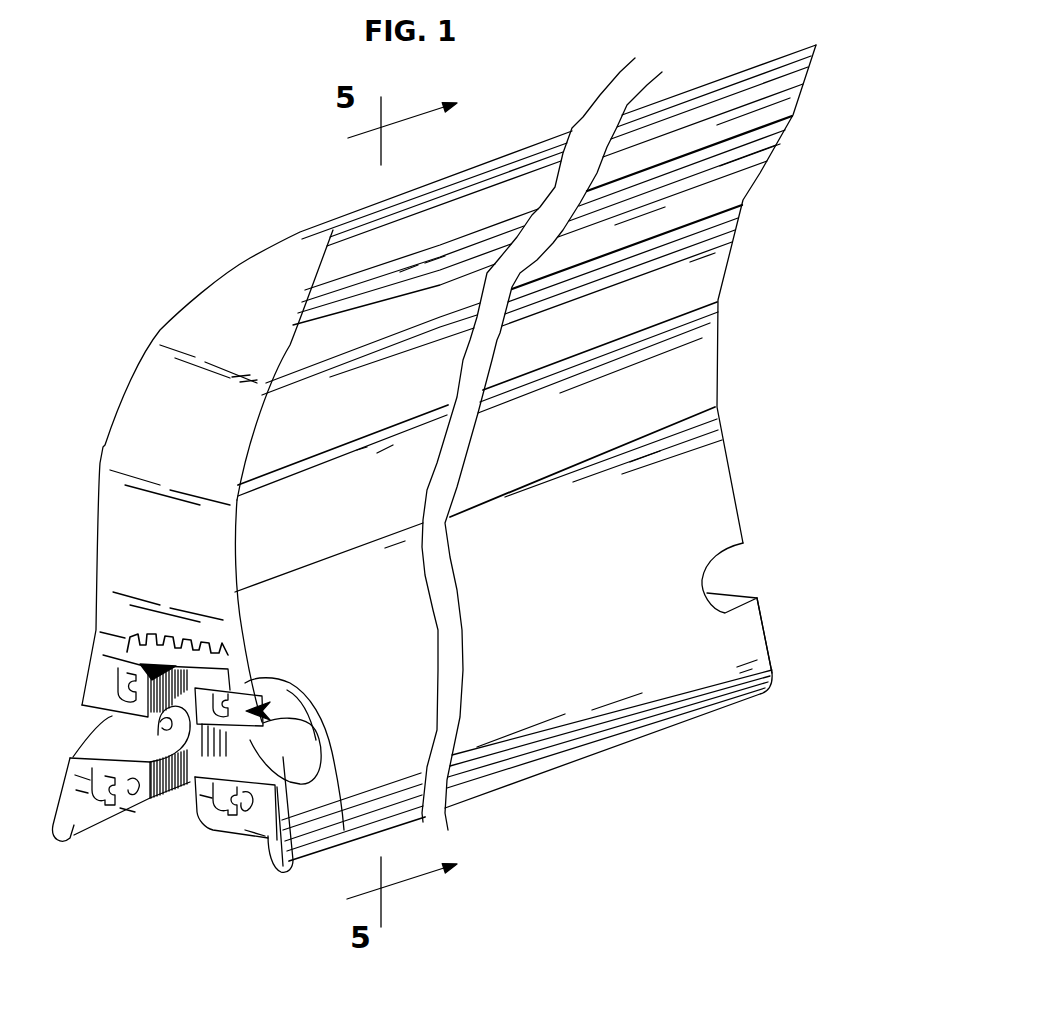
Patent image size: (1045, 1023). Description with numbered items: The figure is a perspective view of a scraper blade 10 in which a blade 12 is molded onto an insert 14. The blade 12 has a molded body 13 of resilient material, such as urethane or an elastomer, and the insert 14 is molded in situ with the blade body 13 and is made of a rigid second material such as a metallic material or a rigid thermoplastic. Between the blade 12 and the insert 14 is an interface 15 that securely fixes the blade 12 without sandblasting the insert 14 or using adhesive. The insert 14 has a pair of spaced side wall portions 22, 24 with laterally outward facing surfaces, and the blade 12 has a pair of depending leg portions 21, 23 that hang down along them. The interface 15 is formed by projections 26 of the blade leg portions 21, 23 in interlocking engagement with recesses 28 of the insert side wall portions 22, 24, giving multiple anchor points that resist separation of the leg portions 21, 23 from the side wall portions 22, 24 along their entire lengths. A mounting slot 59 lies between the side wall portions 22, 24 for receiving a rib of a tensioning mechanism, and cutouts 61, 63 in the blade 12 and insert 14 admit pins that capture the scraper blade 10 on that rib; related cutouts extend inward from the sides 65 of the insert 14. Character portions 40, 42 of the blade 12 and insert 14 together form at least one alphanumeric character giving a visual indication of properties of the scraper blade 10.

The scraper blade 10 is at (126, 294).
The blade 12 is at (142, 413).
The molded body 13 is at (120, 497).
The character portion 40 is at (140, 627).
The character portion 42 is at (137, 647).
The depending leg portion 21 is at (107, 655).
The recess 28 is at (117, 668).
The projection 26 is at (107, 697).
The side 65 is at (65, 813).
The side wall portion 22 is at (132, 805).
The mounting slot 59 is at (185, 808).
The side wall portion 24 is at (207, 822).
The insert 14 is at (241, 876).
The cutout 61 is at (283, 874).
The interface 15 is at (316, 745).
The depending leg portion 23 is at (344, 830).
The cutout 63 is at (720, 588).